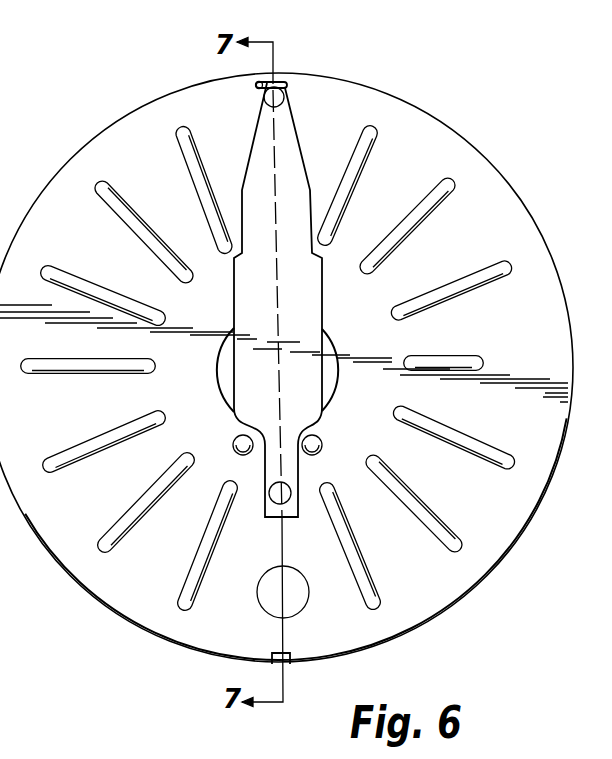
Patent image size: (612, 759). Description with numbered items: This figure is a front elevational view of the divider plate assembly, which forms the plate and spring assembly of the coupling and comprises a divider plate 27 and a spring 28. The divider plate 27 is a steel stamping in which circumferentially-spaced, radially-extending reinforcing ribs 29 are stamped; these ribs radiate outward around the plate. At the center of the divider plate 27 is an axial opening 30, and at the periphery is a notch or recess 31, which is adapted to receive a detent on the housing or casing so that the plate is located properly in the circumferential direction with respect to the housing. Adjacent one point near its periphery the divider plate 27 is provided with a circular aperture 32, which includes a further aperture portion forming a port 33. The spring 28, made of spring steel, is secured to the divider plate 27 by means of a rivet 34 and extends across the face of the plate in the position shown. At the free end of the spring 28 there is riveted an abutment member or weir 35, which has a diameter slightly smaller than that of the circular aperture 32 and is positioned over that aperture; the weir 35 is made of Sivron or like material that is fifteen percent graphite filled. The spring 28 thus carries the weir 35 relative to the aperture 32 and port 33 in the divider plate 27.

The divider plate 27 is at (448, 142).
The spring 28 is at (312, 295).
The reinforcing ribs 29 is at (173, 186).
The axial opening 30 is at (330, 383).
The notch or recess 31 is at (287, 665).
The circular aperture 32 is at (283, 83).
The port 33 is at (263, 85).
The rivet 34 is at (287, 492).
The abutment member or weir 35 is at (281, 98).